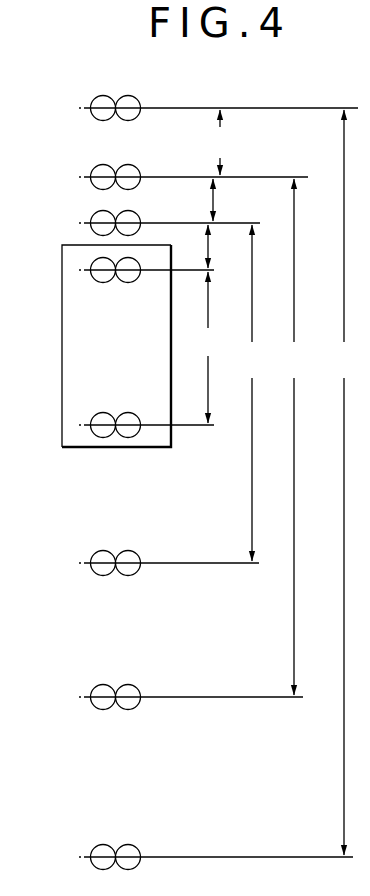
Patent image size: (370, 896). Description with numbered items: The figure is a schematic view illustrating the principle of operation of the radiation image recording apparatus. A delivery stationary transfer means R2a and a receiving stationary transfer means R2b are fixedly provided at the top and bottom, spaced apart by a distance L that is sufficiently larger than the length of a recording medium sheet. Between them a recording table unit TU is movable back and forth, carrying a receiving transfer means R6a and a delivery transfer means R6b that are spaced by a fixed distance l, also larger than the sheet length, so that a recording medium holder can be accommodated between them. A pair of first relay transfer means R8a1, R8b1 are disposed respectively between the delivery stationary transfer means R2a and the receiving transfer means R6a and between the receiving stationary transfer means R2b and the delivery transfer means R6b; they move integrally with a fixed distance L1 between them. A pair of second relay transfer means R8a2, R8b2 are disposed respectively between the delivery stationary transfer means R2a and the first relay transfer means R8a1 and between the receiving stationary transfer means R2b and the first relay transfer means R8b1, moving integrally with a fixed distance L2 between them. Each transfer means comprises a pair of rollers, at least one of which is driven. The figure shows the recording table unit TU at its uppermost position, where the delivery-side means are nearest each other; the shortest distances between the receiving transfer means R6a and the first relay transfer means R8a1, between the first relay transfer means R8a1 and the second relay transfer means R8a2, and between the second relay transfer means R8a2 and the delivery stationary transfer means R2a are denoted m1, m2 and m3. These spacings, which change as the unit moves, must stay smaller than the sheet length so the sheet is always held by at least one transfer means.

The delivery stationary transfer means R2a is at (145, 100).
The second relay transfer means on the delivery side R8a2 is at (145, 164).
The first relay transfer means on the delivery side R8a1 is at (141, 209).
The receiving transfer means R6a is at (120, 258).
The delivery transfer means R6b is at (144, 432).
The first relay transfer means on the receiving side R8b1 is at (145, 552).
The second relay transfer means on the receiving side R8b2 is at (145, 688).
The receiving stationary transfer means R2b is at (143, 848).
The recording table unit TU is at (62, 359).
The shortest distance between receiving transfer means and first relay transfer mean m1 is at (224, 246).
The shortest distance between first and second relay transfer means m2 is at (230, 200).
The shortest distance between second relay transfer means and delivery stationary tr m3 is at (224, 142).
The distance between receiving transfer means and delivery transfer means l is at (204, 347).
The distance between first relay transfer means L1 is at (252, 393).
The distance between second relay transfer means L2 is at (293, 437).
The distance between stationary transfer means L is at (339, 482).